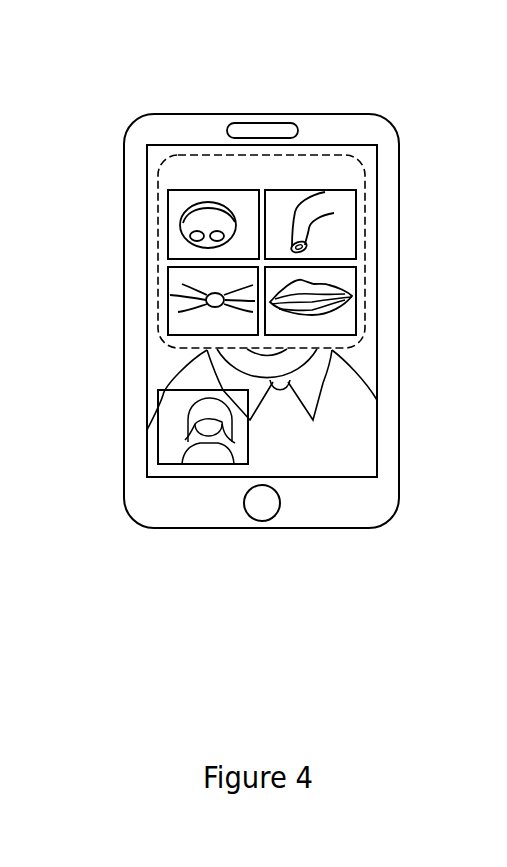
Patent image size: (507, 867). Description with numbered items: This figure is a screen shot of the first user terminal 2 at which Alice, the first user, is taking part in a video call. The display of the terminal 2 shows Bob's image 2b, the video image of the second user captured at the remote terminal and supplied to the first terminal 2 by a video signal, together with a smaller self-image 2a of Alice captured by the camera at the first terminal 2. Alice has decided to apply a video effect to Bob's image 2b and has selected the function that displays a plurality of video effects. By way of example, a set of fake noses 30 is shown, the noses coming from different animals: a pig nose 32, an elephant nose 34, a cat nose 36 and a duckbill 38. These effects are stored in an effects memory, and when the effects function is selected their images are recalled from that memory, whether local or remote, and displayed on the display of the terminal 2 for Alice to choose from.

The first user terminal 2 is at (212, 113).
The self-image of the first user 2a is at (172, 447).
The video image of the second user 2b is at (368, 157).
The set of fake noses 30 is at (367, 250).
The pig nose 32 is at (167, 227).
The elephant nose 34 is at (340, 192).
The cat nose 36 is at (358, 322).
The duckbill 38 is at (167, 308).